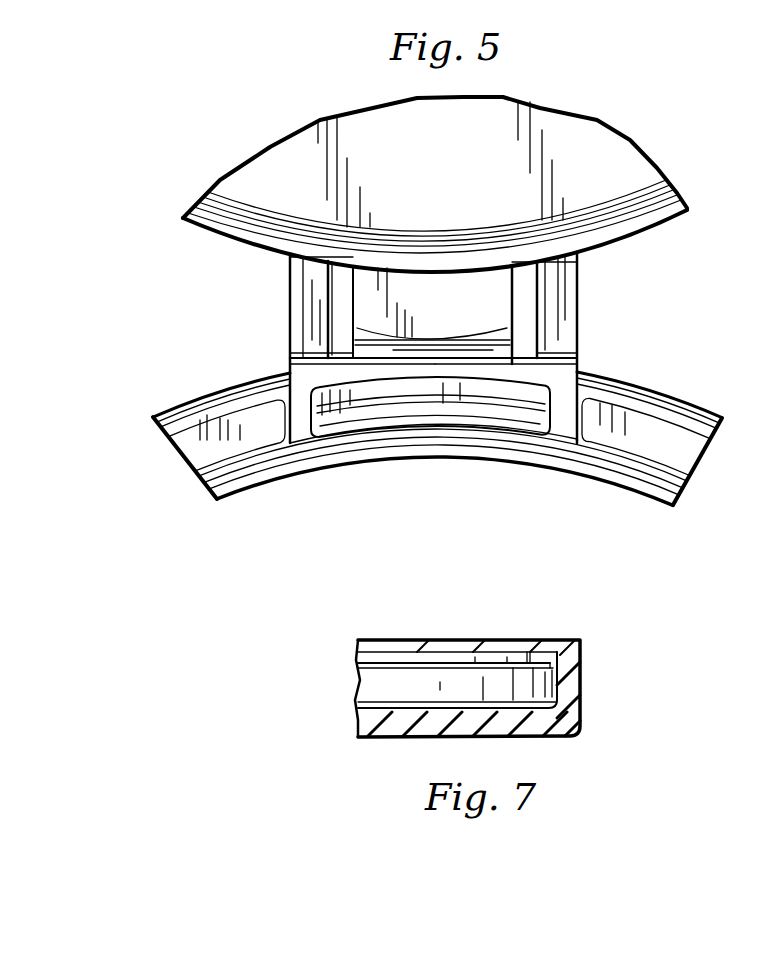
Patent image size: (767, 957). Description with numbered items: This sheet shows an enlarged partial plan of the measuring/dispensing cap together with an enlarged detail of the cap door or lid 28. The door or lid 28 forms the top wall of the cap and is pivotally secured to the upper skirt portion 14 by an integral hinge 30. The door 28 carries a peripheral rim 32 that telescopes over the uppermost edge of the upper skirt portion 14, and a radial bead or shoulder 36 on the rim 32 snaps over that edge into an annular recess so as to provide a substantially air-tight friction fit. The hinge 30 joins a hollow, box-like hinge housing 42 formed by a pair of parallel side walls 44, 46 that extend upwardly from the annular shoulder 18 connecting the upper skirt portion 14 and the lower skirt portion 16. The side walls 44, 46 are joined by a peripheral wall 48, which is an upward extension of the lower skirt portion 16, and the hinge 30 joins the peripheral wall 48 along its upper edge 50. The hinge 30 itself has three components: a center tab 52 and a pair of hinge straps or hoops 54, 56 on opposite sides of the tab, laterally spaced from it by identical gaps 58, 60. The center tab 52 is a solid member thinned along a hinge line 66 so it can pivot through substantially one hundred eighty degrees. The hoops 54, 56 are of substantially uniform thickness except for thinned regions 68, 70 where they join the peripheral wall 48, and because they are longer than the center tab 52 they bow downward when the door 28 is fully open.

In FIG. 5, the upper skirt portion 14 is at (223, 461).
In FIG. 5, the lower skirt portion 16 is at (707, 413).
In FIG. 5, the annular shoulder 18 is at (710, 457).
In FIG. 5, the dispensing door or lid 28 is at (663, 236).
In FIG. 7, the dispensing door or lid 28 is at (376, 746).
In FIG. 5, the integral hinge 30 is at (449, 346).
In FIG. 5, the peripheral rim 32 is at (228, 223).
In FIG. 7, the peripheral rim 32 is at (581, 684).
In FIG. 5, the radial bead or shoulder 36 is at (282, 225).
In FIG. 7, the radial bead or shoulder 36 is at (533, 655).
In FIG. 5, the hinge housing 42 is at (588, 397).
In FIG. 5, the side wall 44 is at (293, 410).
In FIG. 5, the side wall 46 is at (567, 427).
In FIG. 5, the peripheral wall 48 is at (517, 385).
In FIG. 5, the upper edge 50 is at (413, 370).
In FIG. 5, the center tab 52 is at (423, 283).
In FIG. 5, the hinge strap or hoop 54 is at (303, 271).
In FIG. 5, the hinge strap or hoop 56 is at (560, 285).
In FIG. 5, the gap or space 58 is at (338, 298).
In FIG. 5, the gap or space 60 is at (520, 287).
In FIG. 5, the hinge line 66 is at (428, 347).
In FIG. 5, the thinned region 68 is at (290, 358).
In FIG. 5, the thinned region 70 is at (575, 360).